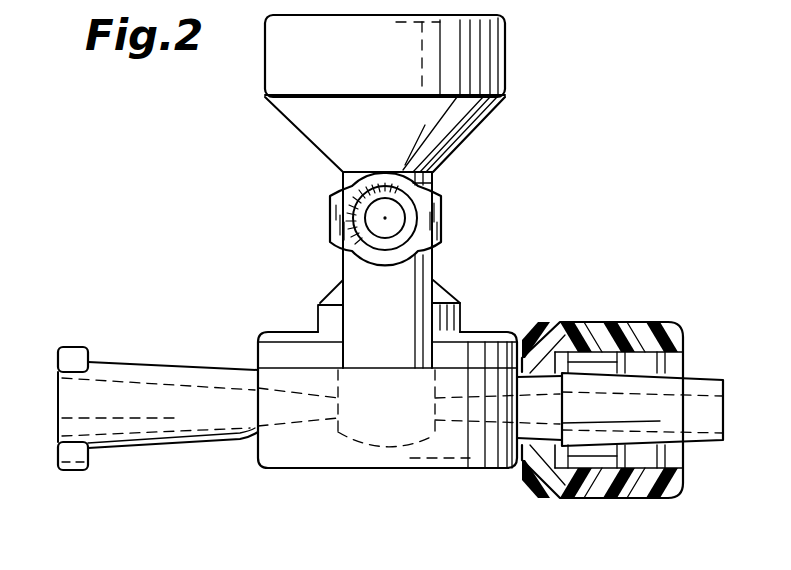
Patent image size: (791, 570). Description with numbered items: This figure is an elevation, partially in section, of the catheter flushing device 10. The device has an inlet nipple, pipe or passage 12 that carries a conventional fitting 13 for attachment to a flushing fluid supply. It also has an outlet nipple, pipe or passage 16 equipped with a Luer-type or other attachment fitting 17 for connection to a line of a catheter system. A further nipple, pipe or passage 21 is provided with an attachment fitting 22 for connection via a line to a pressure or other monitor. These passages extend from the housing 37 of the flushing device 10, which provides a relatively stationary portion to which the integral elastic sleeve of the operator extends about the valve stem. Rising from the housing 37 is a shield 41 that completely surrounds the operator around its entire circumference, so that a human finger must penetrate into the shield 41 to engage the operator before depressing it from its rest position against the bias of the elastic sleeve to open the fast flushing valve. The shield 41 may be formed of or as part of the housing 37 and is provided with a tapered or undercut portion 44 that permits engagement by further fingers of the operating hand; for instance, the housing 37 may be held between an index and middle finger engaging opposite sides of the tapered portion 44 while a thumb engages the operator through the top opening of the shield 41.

The catheter flushing device 10 is at (300, 312).
The inlet passage 12 is at (433, 183).
The fitting 13 is at (440, 232).
The outlet passage 16 is at (700, 380).
The attachment fitting 17 is at (606, 325).
The passage 21 is at (202, 366).
The attachment fitting 22 is at (70, 352).
The housing 37 is at (341, 260).
The shield 41 is at (505, 58).
The tapered portion 44 is at (470, 135).